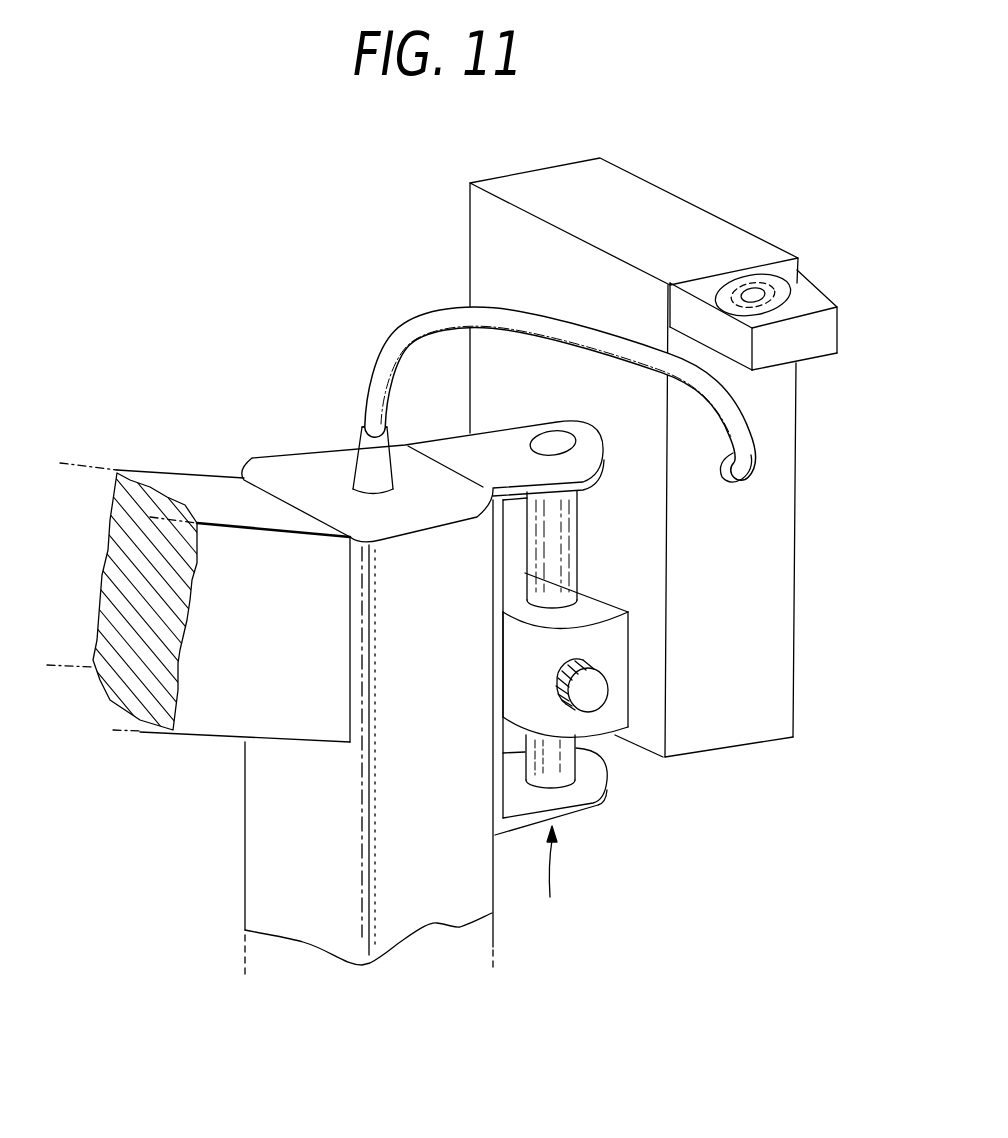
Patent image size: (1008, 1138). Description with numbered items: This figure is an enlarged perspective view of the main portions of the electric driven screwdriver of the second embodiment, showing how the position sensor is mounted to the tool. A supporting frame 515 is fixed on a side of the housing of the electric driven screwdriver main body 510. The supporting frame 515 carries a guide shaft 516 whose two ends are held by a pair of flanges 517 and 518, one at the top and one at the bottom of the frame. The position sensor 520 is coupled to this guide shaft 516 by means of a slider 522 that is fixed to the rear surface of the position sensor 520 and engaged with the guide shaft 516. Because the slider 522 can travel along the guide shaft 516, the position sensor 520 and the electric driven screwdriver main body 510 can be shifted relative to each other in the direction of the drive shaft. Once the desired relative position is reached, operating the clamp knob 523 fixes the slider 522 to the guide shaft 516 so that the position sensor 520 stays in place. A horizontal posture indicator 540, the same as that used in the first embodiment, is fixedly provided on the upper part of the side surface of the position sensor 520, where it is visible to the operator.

The electric driven screwdriver main body 510 is at (248, 848).
The supporting frame 515 is at (558, 880).
The guide shaft 516 is at (572, 533).
The flange 517 is at (452, 445).
The flange 518 is at (593, 812).
The position sensor 520 is at (778, 573).
The slider 522 is at (622, 670).
The clamp knob 523 is at (595, 693).
The horizontal posture indicator 540 is at (813, 353).